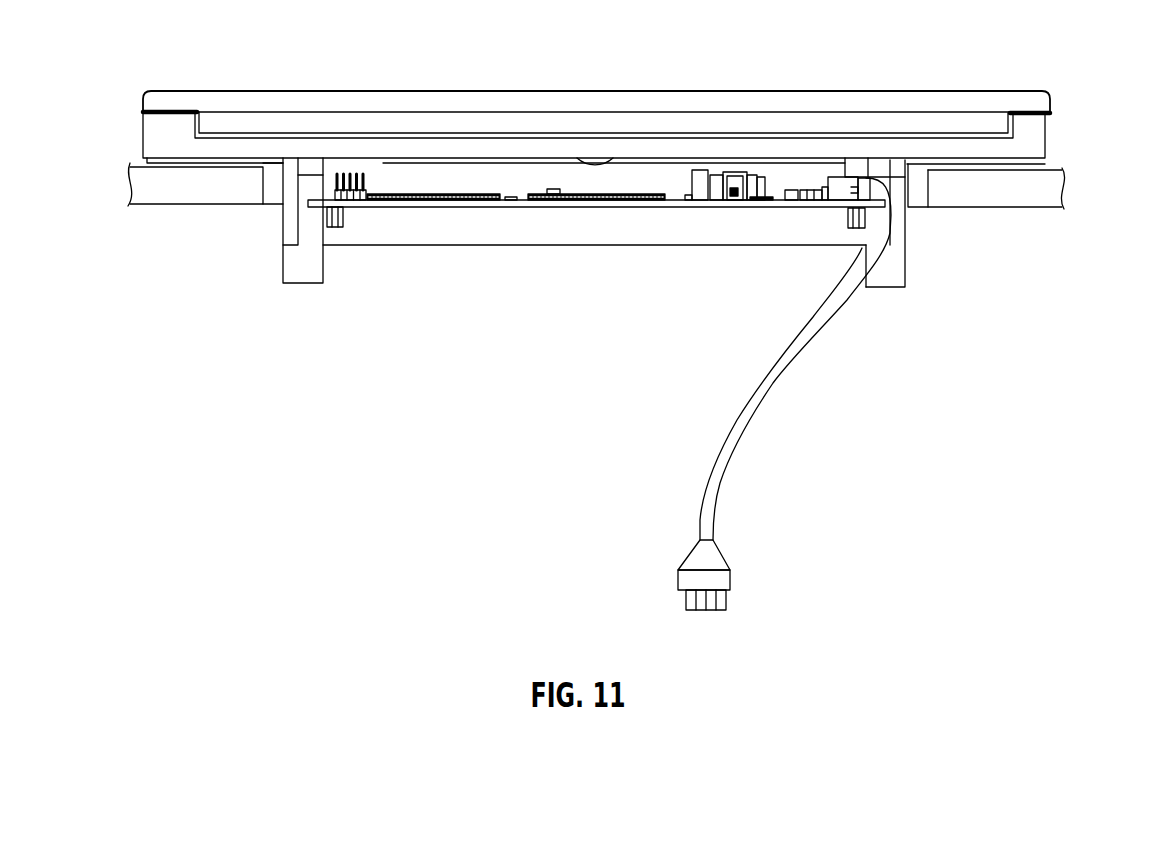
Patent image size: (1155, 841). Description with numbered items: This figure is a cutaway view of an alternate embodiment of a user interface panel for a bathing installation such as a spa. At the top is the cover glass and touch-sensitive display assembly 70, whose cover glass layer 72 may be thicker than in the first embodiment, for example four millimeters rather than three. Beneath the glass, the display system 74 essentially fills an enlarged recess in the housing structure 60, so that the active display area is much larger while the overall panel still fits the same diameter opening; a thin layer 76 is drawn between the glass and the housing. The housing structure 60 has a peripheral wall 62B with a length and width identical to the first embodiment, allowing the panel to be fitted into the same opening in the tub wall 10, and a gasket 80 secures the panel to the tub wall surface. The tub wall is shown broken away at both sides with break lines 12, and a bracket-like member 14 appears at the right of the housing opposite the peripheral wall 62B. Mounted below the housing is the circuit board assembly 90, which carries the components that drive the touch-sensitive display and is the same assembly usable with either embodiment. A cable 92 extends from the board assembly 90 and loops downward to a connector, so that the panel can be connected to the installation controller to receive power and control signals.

The cover glass and touch-sensitive display assembly 70 is at (1062, 102).
The cover glass layer 72 is at (458, 98).
The display system 74 is at (392, 122).
The adhesive layer 76 is at (145, 106).
The housing structure 60 is at (145, 130).
The gasket 80 is at (146, 161).
The tub wall surface 10 is at (210, 195).
The door panel 12 is at (162, 168).
The bracket 14 is at (918, 198).
The peripheral wall 62B is at (290, 232).
The circuit board assembly 90 is at (473, 220).
The cable 92 is at (723, 453).